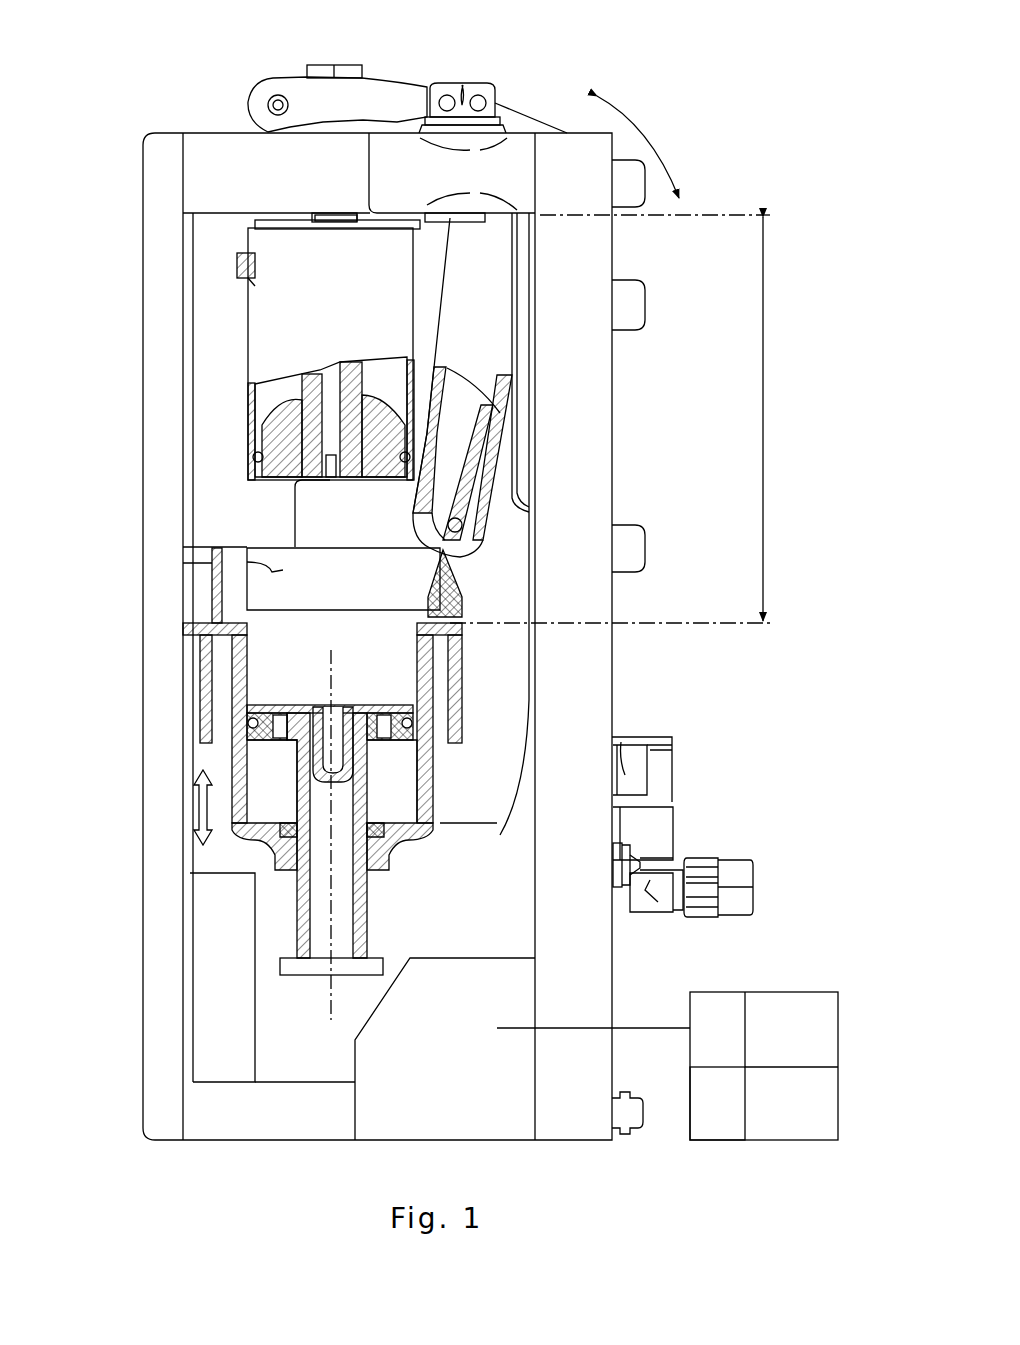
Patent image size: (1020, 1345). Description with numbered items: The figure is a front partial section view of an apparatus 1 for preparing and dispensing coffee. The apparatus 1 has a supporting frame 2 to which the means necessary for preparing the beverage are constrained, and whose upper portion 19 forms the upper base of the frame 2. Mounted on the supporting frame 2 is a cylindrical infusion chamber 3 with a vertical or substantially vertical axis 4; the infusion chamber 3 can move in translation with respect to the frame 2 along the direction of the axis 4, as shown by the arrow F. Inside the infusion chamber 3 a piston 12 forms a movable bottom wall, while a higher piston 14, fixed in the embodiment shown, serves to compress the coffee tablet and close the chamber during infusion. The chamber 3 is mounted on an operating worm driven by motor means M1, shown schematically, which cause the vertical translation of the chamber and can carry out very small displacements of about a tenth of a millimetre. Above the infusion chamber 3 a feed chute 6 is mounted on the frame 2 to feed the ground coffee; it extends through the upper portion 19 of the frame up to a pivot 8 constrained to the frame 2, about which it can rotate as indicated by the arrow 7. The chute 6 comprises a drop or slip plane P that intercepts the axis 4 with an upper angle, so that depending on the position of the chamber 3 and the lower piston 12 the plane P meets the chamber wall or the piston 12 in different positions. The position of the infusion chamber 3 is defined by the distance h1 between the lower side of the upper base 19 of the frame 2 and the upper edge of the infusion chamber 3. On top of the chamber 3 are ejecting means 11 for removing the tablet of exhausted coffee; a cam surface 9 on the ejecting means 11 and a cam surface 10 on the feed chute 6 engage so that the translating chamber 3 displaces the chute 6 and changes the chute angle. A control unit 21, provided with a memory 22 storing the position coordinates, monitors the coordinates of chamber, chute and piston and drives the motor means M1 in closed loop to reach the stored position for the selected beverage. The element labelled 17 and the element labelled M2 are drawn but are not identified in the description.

The apparatus 1 is at (125, 567).
The supporting frame 2 is at (170, 258).
The infusion chamber 3 is at (230, 728).
The axis 4 is at (283, 672).
The feed chute 6 is at (493, 355).
The arrow 7 is at (648, 145).
The pivot 8 is at (250, 98).
The cam surface 9 is at (462, 573).
The cam surface 10 is at (440, 537).
The ejecting means 11 is at (267, 590).
The piston 12 is at (440, 677).
The higher piston 14 is at (255, 440).
The lower chamber 17 is at (287, 1090).
The upper portion 19 is at (205, 168).
The control unit 21 is at (733, 1113).
The memory 22 is at (782, 1003).
The arrow F is at (187, 803).
The slip plane P is at (432, 502).
The distance h1 is at (655, 418).
The motor means M1 is at (467, 1084).
The sensor / second motor M2 is at (318, 65).